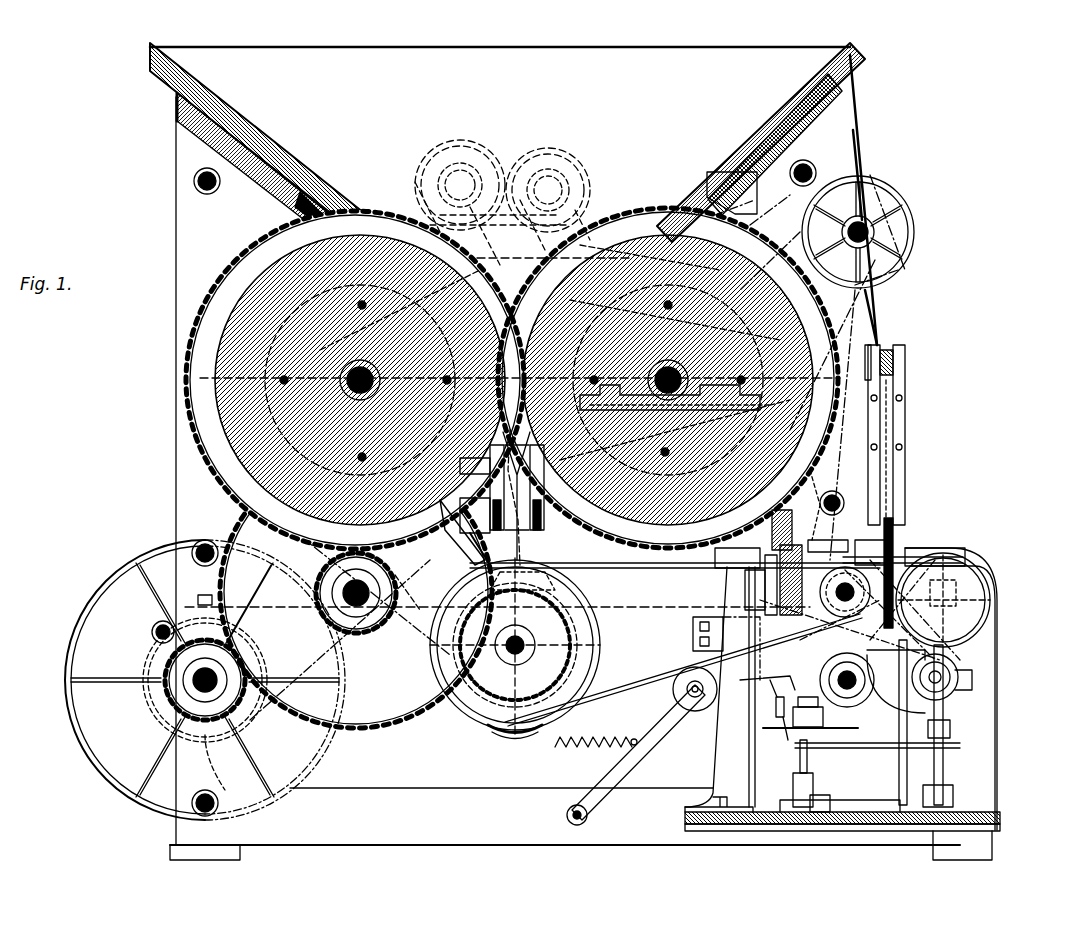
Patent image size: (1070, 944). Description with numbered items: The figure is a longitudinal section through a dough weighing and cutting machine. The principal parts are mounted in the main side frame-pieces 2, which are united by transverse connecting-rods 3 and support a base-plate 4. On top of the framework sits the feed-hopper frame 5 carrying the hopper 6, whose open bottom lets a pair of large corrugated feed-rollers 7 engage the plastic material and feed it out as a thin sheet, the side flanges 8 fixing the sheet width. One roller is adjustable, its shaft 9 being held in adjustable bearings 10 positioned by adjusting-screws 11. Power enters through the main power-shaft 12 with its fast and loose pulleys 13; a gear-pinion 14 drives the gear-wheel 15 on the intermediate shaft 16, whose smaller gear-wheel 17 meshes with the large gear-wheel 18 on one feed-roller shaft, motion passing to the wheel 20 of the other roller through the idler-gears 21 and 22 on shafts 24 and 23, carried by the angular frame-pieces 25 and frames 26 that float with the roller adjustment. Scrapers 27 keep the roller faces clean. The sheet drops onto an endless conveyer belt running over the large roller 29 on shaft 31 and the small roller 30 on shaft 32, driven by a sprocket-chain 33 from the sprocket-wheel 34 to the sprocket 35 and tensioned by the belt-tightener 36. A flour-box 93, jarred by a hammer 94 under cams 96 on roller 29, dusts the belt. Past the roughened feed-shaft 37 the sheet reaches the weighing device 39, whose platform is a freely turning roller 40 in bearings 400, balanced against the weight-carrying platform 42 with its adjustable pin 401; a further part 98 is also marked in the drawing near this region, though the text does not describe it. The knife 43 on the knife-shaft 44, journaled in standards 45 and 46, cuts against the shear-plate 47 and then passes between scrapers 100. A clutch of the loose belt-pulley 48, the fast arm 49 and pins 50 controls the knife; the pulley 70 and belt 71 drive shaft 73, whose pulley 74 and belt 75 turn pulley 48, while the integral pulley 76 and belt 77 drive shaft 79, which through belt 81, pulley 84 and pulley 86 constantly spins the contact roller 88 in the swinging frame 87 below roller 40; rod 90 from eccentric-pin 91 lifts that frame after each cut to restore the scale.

The main side frame-pieces 2 is at (573, 453).
The transverse connecting-rods 3 is at (806, 170).
The base-plate 4 is at (830, 800).
The feed-hopper frame 5 is at (207, 208).
The hopper 6 is at (507, 144).
The feed-rollers 7 is at (275, 272).
The side flanges 8 is at (830, 345).
The shaft 9 is at (672, 372).
The adjustable bearings 10 is at (720, 410).
The adjusting-screws 11 is at (805, 380).
The main power-shaft 12 is at (195, 690).
The fast and loose pulleys 13 is at (65, 653).
The gear-pinion 14 is at (210, 740).
The gear-wheel 15 is at (372, 730).
The intermediate shaft 16 is at (340, 580).
The gear-wheel 17 is at (330, 625).
The large gear-wheel 18 is at (205, 470).
The wheel 20 is at (668, 387).
The idler-gear 21 is at (478, 145).
The idler-gear 22 is at (585, 168).
The shaft 23 is at (548, 190).
The shaft 24 is at (460, 185).
The angular frame-pieces 25 is at (425, 235).
The frames 26 is at (555, 248).
The scrapers 27 is at (528, 489).
The belt roller 29 is at (430, 390).
The belt roller 30 is at (915, 610).
The shaft 31 is at (524, 645).
The shaft 32 is at (846, 568).
The sprocket-chain 33 is at (405, 605).
The sprocket-wheel 34 is at (245, 420).
The sprocket 35 is at (455, 633).
The belt-tightener 36 is at (672, 692).
The feed-shaft 37 is at (905, 548).
The weighing device 39 is at (895, 765).
The scale-platform roller 40 is at (990, 603).
The weight-carrying platform 42 is at (798, 745).
The knife 43 is at (943, 600).
The knife-shaft 44 is at (675, 544).
The standard 45 is at (760, 695).
The standard 46 is at (950, 760).
The shear-plate 47 is at (895, 540).
The belt-pulley (loose clutch member) 48 is at (773, 576).
The arm (fast clutch member) 49 is at (745, 585).
The pins 50 is at (775, 545).
The pulley 70 is at (143, 665).
The belt 71 is at (778, 222).
The shaft 73 is at (890, 210).
The pulley 74 is at (915, 227).
The belt 75 is at (903, 298).
The belt-pulley 76 is at (822, 505).
The belt 77 is at (850, 615).
The shaft 79 is at (828, 670).
The belt 81 is at (774, 707).
The pulley 84 is at (810, 704).
The pulley 86 is at (960, 668).
The swinging frame 87 is at (870, 700).
The contact or friction roller 88 is at (962, 685).
The rod 90 is at (965, 655).
The eccentric-pin 91 is at (951, 551).
The flour-box 93 is at (462, 532).
The hammer 94 is at (489, 511).
The cams 96 is at (530, 572).
The shaft 98 is at (665, 575).
The scrapers 100 is at (905, 440).
The bearings 400 is at (955, 600).
The screw or adjustably-supported pin 401 is at (710, 720).